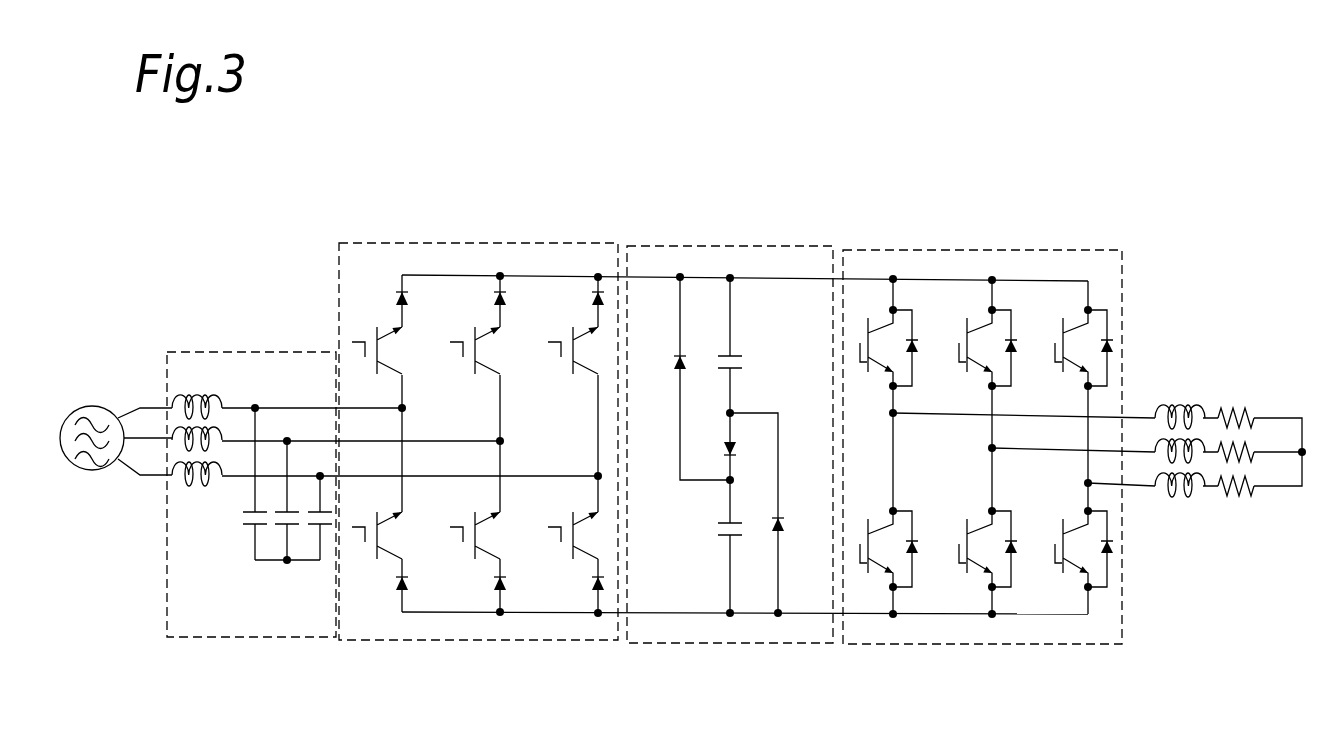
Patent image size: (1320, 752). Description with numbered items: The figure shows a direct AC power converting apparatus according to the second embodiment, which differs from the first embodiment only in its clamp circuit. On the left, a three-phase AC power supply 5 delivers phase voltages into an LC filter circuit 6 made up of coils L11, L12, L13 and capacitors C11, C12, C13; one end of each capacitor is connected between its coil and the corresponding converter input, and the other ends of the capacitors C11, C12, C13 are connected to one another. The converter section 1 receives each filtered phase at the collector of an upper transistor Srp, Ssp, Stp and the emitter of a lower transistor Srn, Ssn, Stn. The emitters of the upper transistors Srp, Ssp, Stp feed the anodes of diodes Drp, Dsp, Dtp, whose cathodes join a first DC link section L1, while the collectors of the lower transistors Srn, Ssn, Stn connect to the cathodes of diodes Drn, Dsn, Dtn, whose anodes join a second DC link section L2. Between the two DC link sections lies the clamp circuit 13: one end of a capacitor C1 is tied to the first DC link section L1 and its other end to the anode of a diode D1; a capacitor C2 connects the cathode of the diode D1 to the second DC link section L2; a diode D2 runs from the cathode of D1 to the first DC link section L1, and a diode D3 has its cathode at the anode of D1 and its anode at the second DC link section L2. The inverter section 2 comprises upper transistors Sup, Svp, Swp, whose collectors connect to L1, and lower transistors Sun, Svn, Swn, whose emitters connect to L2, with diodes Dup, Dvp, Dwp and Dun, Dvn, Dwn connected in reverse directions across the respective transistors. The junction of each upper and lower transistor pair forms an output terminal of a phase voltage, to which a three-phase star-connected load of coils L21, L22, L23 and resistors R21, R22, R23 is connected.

The converter section 1 is at (482, 240).
The inverter section 2 is at (993, 245).
The three-phase AC power supply 5 is at (82, 468).
The LC filter circuit 6 is at (247, 348).
The clamp circuit 13 is at (735, 245).
The first DC link section L1 is at (773, 277).
The second DC link section L2 is at (748, 613).
The coil L11 is at (198, 397).
The coil L12 is at (212, 434).
The coil L13 is at (198, 492).
The capacitor C11 is at (238, 486).
The capacitor C12 is at (277, 520).
The capacitor C13 is at (309, 551).
The transistor Srp is at (372, 367).
The transistor Ssp is at (470, 367).
The transistor Stp is at (567, 367).
The transistor Srn is at (374, 527).
The transistor Ssn is at (470, 527).
The transistor Stn is at (567, 527).
The diode Drp is at (384, 301).
The diode Dsp is at (482, 301).
The diode Dtp is at (579, 301).
The diode Drn is at (386, 587).
The diode Dsn is at (484, 587).
The diode Dtn is at (582, 587).
The diode D1 is at (748, 450).
The diode D2 is at (661, 365).
The diode D3 is at (797, 530).
The capacitor C1 is at (750, 365).
The capacitor C2 is at (712, 531).
The transistor Sup is at (872, 360).
The transistor Svp is at (965, 360).
The transistor Swp is at (1061, 360).
The transistor Sun is at (872, 561).
The transistor Svn is at (965, 561).
The transistor Swn is at (1061, 561).
The diode Dup is at (925, 346).
The diode Dvp is at (1022, 346).
The diode Dwp is at (1104, 321).
The diode Dun is at (927, 542).
The diode Dvn is at (1023, 542).
The diode Dwn is at (1104, 578).
The coil L21 is at (1180, 403).
The coil L22 is at (1165, 442).
The coil L23 is at (1180, 500).
The resistor R21 is at (1241, 403).
The resistor R22 is at (1256, 446).
The resistor R23 is at (1238, 501).